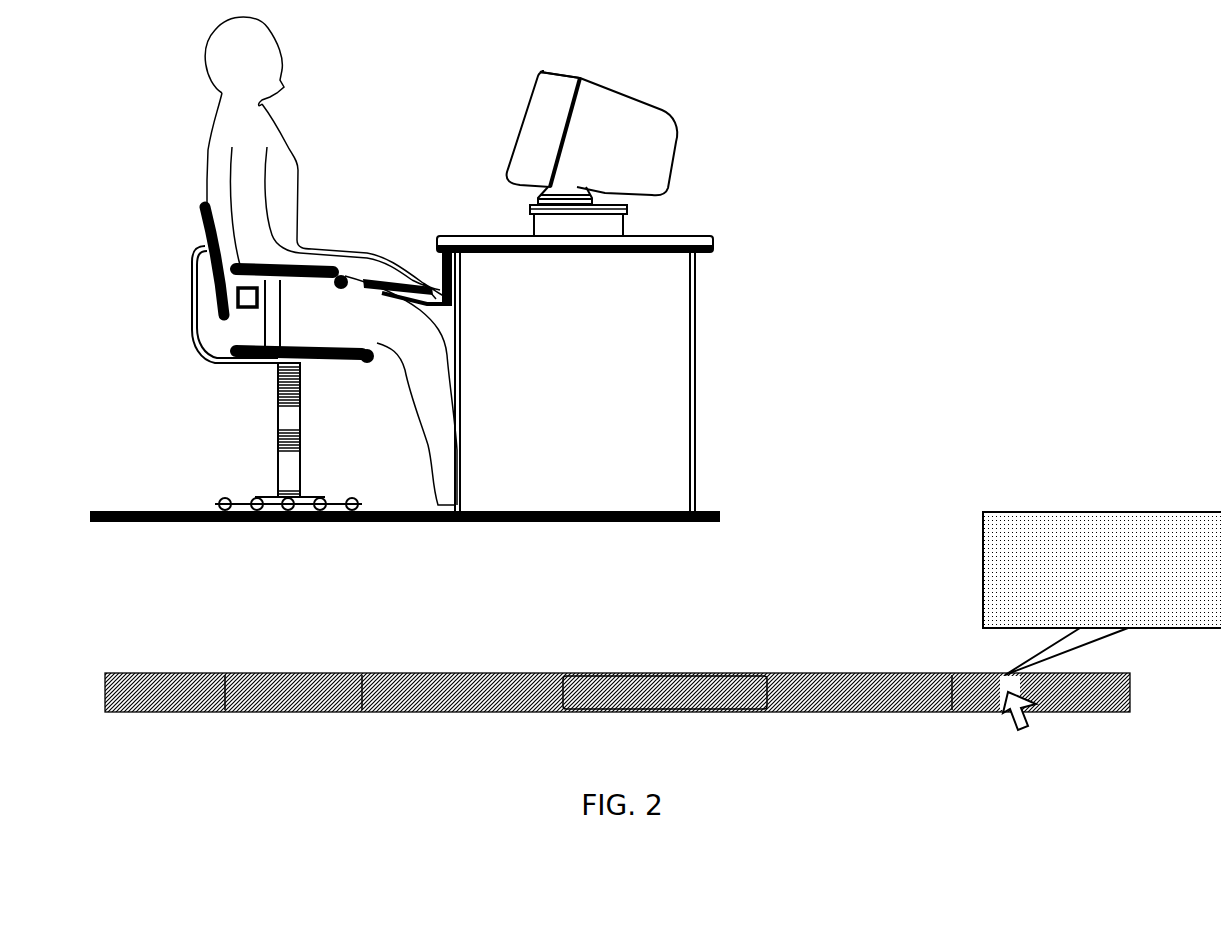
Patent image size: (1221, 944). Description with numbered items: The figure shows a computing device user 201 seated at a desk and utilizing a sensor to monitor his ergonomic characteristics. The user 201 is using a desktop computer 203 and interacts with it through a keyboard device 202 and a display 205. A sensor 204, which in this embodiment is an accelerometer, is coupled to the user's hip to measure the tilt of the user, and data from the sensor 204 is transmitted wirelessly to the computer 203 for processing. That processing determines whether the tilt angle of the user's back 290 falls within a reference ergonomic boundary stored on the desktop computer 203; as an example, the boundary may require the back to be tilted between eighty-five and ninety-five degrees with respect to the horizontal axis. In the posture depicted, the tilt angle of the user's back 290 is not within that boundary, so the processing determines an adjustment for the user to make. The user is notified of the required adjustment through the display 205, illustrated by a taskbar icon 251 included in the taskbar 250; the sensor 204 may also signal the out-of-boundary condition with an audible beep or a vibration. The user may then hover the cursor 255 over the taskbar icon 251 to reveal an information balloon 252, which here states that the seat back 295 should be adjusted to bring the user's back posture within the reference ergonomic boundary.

The user 201 is at (207, 160).
The user's back 290 is at (222, 93).
The seat back 295 is at (197, 293).
The sensor 204 is at (243, 310).
The keyboard device 202 is at (453, 293).
The desktop computer 203 is at (592, 153).
The display 205 is at (540, 69).
The taskbar 250 is at (339, 673).
The information balloon 252 is at (983, 518).
The taskbar icon 251 is at (1005, 675).
The cursor 255 is at (1018, 727).